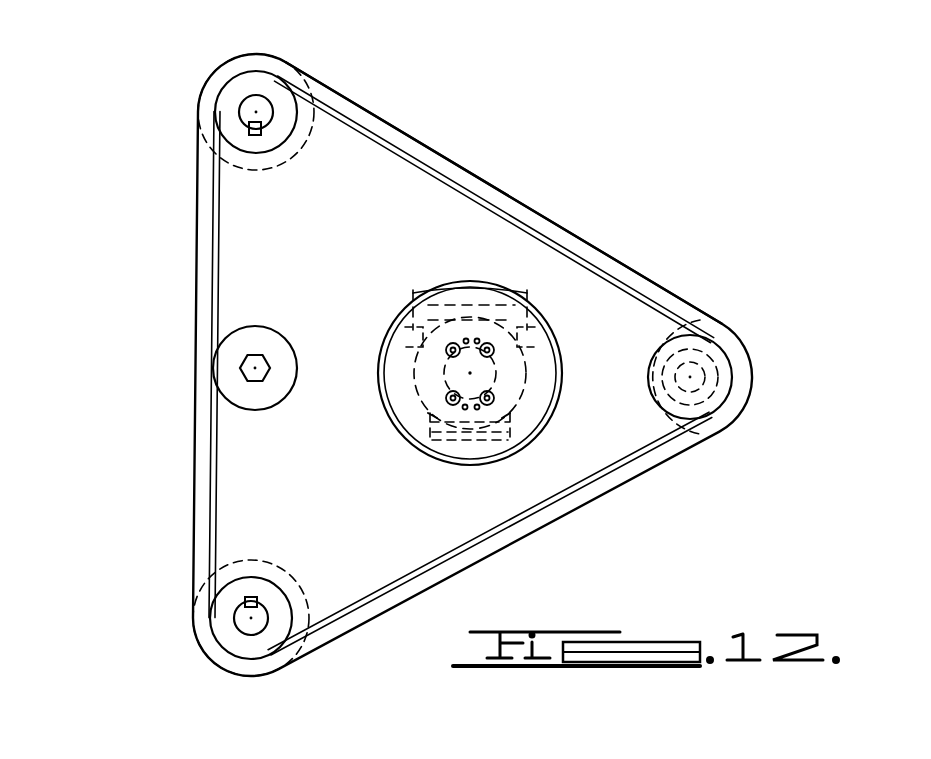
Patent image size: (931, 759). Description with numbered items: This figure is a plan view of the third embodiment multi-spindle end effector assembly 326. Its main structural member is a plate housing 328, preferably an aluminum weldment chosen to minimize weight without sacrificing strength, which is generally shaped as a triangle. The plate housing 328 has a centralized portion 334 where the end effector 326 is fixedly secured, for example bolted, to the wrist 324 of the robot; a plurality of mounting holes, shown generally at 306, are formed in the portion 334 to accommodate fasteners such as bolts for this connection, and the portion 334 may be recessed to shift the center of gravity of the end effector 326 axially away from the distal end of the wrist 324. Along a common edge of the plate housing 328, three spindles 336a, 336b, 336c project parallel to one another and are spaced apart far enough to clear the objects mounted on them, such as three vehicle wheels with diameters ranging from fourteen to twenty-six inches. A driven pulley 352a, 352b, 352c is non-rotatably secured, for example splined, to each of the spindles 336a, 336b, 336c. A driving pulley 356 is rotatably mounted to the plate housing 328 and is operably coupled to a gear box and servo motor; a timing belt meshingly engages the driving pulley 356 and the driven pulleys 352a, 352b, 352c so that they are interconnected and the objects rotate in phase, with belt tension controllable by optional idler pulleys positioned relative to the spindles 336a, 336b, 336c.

The mounting holes 306 is at (469, 373).
The wrist 324 is at (519, 433).
The end effector assembly 326 is at (628, 227).
The plate housing 328 is at (530, 527).
The centralized portion 334 is at (548, 362).
The spindle 336a is at (240, 111).
The spindle 336b is at (243, 368).
The spindle 336c is at (243, 622).
The driven pulley 352a is at (297, 97).
The driven pulley 352b is at (262, 330).
The driven pulley 352c is at (265, 588).
The driving pulley 356 is at (703, 428).